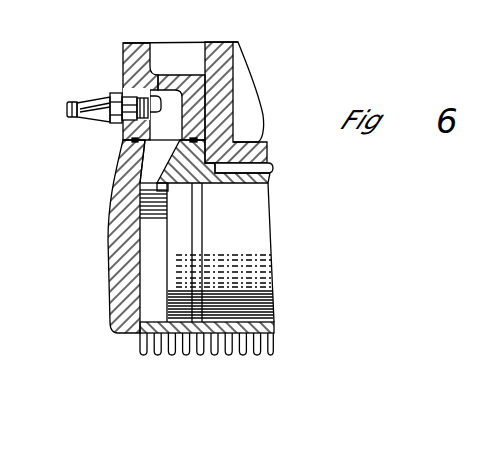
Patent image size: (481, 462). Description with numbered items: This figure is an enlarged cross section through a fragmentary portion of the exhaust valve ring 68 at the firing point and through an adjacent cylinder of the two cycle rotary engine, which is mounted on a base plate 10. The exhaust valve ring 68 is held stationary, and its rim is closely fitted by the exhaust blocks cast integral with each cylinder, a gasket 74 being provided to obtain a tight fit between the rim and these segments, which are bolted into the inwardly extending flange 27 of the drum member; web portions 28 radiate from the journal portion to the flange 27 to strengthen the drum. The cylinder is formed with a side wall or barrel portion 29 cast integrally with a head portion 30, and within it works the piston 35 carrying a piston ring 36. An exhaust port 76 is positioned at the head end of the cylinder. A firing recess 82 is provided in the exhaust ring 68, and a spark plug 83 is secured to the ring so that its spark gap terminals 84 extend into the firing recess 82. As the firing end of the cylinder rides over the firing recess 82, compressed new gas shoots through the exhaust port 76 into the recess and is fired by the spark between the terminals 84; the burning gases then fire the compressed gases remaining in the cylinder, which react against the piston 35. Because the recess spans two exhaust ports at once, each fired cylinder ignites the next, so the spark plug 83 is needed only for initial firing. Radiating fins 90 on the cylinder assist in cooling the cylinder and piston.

The base plate 10 is at (341, 8).
The inwardly extending flange 27 is at (258, 143).
The web portions 28 is at (243, 82).
The side wall or barrel portion 29 is at (274, 170).
The head portion 30 is at (108, 247).
The piston 35 is at (258, 240).
The piston ring 36 is at (193, 223).
The exhaust valve ring 68 is at (126, 55).
The gasket 74 is at (128, 143).
The exhaust port 76 is at (158, 157).
The firing recess 82 is at (122, 132).
The spark plug 83 is at (90, 100).
The spark gap terminals 84 is at (158, 98).
The radiating fins 90 is at (170, 354).